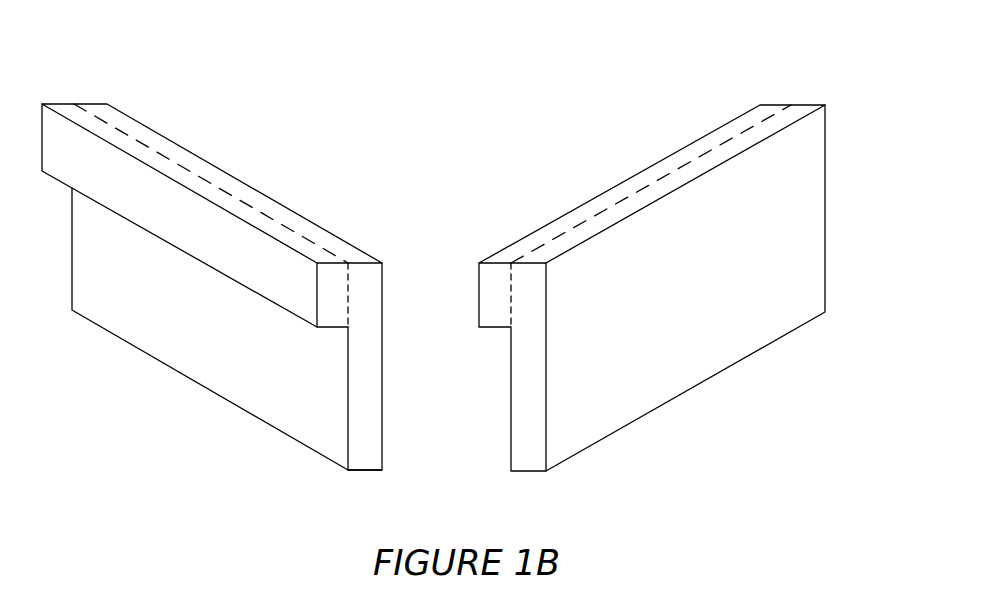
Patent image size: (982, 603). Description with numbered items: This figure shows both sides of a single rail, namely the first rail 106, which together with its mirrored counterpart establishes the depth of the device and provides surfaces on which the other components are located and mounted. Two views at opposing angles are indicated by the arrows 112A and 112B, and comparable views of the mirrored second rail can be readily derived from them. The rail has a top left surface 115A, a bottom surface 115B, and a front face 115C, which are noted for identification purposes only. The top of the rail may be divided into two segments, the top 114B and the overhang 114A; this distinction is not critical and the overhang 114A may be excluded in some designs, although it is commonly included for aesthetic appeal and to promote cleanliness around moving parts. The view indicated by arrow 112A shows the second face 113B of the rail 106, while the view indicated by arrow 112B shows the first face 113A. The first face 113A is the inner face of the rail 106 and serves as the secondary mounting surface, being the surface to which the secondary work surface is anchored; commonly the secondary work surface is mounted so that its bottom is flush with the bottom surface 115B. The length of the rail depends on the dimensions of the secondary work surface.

The view arrow 112A is at (150, 58).
The view arrow 112B is at (855, 58).
The first rail 106 is at (191, 128).
The top left surface 115A is at (212, 185).
The top 114B is at (292, 220).
The overhang 114A is at (330, 275).
The front face 115C is at (368, 398).
The bottom surface 115B is at (366, 472).
The second face 113B is at (182, 340).
The first face 113A is at (723, 342).